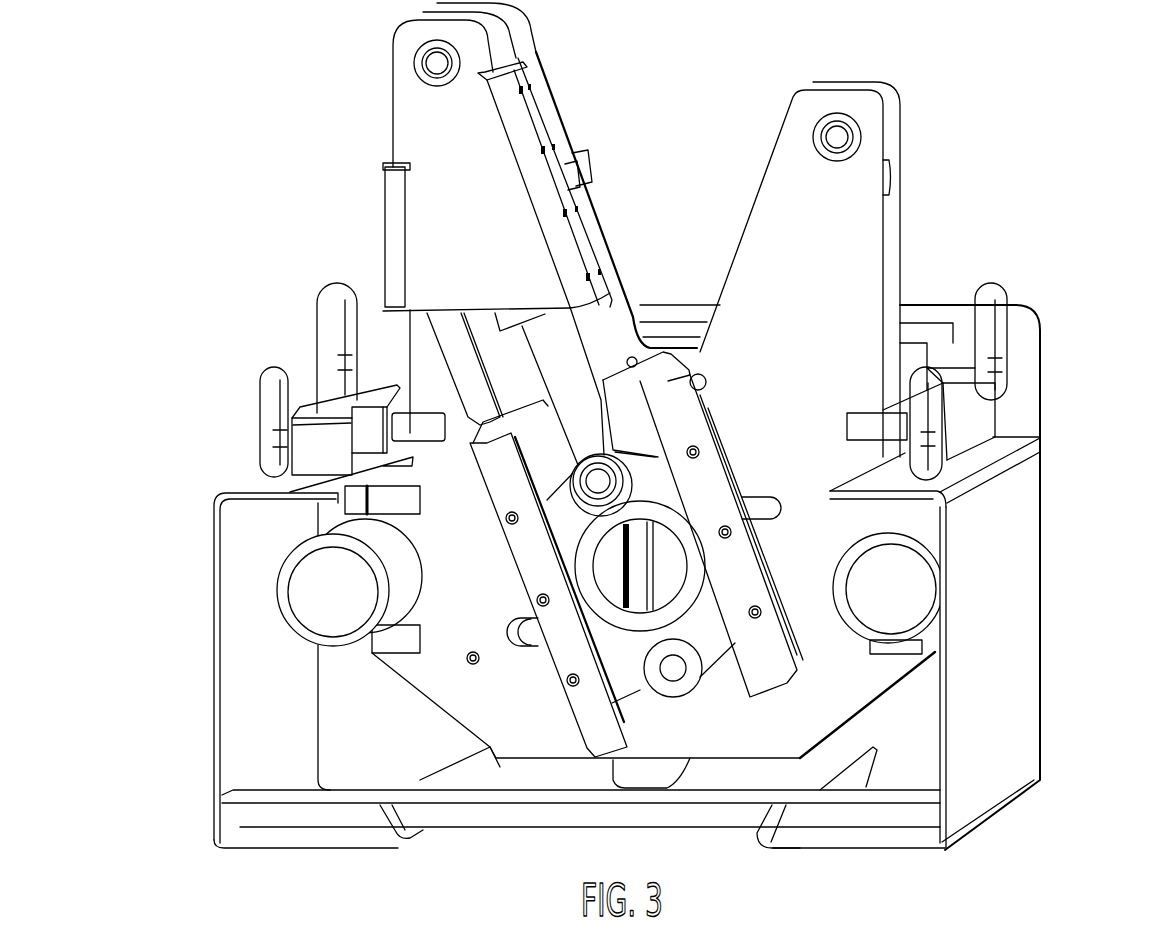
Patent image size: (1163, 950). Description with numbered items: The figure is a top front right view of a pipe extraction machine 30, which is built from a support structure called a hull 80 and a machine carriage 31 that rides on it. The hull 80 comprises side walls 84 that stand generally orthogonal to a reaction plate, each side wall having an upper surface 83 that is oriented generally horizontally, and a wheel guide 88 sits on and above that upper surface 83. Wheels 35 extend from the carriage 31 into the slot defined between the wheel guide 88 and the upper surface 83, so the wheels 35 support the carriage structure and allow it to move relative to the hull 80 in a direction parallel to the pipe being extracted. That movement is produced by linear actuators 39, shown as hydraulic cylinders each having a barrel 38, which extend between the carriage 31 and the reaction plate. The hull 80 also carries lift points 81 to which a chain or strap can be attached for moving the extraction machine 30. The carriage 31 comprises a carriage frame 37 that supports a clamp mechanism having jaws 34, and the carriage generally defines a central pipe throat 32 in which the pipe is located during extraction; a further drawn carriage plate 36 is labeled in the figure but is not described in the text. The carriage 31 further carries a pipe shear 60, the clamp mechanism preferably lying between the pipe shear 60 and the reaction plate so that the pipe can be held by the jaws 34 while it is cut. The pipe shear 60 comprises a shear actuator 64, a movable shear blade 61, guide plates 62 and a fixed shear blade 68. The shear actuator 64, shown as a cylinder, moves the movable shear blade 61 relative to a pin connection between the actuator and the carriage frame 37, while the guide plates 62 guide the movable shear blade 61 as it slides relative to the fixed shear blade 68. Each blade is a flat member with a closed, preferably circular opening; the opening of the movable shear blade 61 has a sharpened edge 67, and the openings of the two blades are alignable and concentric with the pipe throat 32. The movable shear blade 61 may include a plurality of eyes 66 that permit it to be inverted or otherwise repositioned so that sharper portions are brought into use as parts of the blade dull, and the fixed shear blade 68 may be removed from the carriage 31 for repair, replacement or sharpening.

The pipe extraction machine 30 is at (245, 148).
The machine carriage 31 is at (680, 82).
The pipe throat 32 is at (663, 597).
The jaws 34 is at (605, 565).
The wheels 35 is at (376, 435).
The support plate 36 is at (842, 253).
The carriage frame 37 is at (888, 110).
The barrel 38 is at (333, 592).
The linear actuators 39 is at (263, 610).
The pipe shear 60 is at (733, 400).
The movable shear blade 61 is at (780, 660).
The guide plates 62 is at (562, 648).
The shear actuator 64 is at (573, 400).
The eyes 66 is at (675, 690).
The sharpened edge 67 is at (590, 655).
The fixed shear blade 68 is at (627, 407).
The hull 80 is at (1020, 602).
The lift points 81 is at (262, 393).
The upper surface 83 is at (953, 472).
The side walls 84 is at (212, 512).
The wheel guide 88 is at (310, 400).